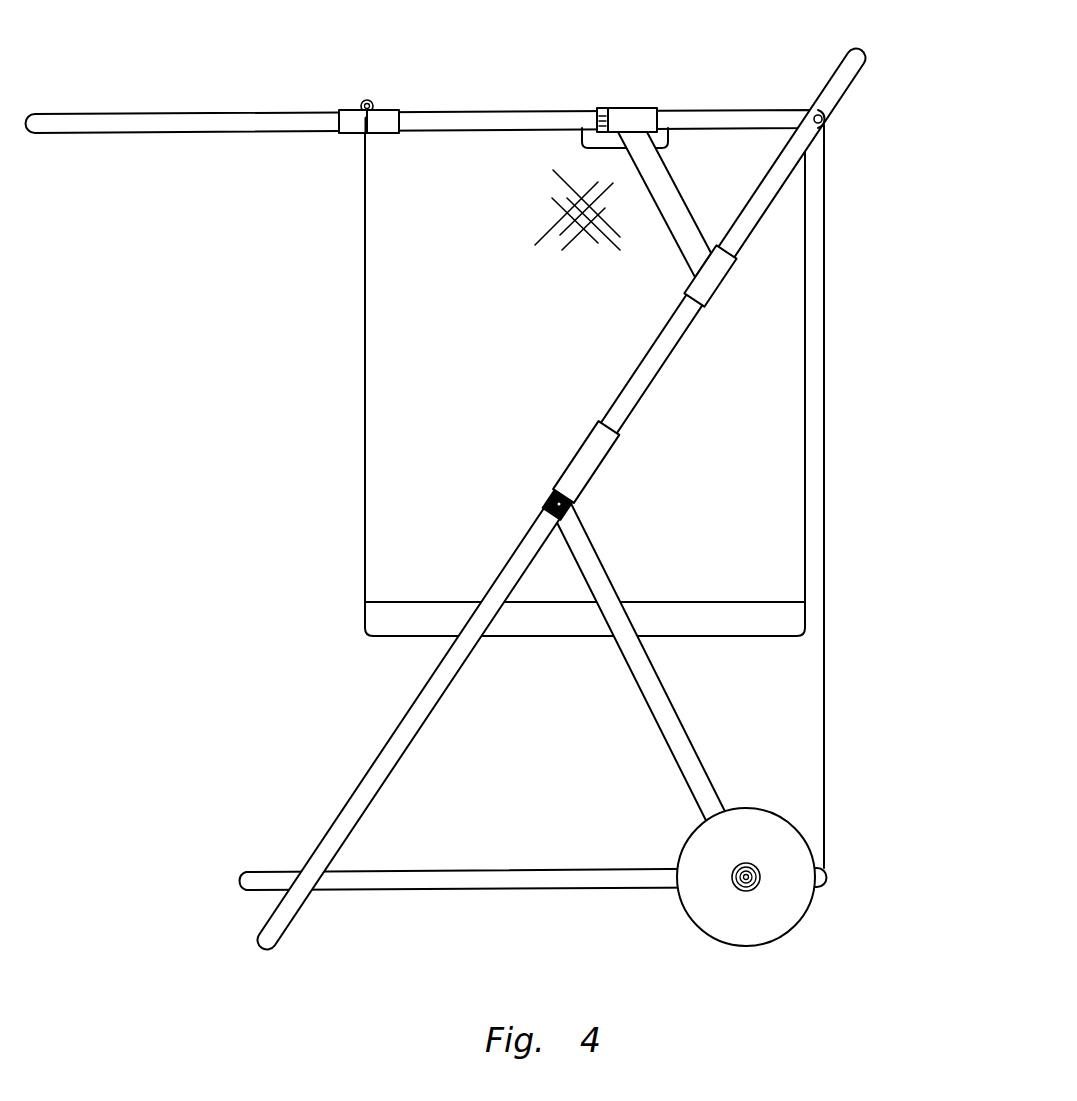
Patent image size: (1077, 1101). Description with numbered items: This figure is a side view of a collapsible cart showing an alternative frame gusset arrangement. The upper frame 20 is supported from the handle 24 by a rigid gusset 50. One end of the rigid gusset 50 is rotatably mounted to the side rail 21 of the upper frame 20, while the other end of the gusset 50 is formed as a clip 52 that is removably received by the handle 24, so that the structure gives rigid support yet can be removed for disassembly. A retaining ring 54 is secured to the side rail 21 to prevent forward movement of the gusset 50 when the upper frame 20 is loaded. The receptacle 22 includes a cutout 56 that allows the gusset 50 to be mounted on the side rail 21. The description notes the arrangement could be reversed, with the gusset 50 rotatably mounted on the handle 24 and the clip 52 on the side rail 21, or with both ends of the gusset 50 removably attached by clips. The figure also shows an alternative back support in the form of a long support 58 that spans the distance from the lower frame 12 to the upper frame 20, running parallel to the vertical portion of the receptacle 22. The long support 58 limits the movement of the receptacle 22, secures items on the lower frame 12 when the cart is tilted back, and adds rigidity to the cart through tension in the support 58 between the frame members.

The lower frame 12 is at (437, 868).
The upper frame 20 is at (425, 117).
The side rail 21 is at (463, 133).
The receptacle 22 is at (365, 470).
The handle 24 is at (840, 68).
The rigid gusset 50 is at (673, 235).
The clip 52 is at (700, 293).
The retaining ring 54 is at (600, 108).
The cutout 56 is at (673, 146).
The long support 58 is at (825, 667).